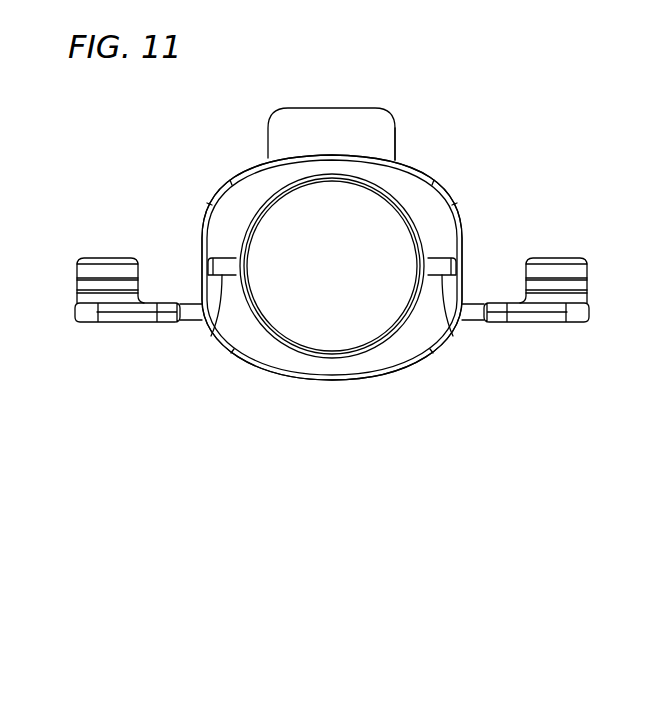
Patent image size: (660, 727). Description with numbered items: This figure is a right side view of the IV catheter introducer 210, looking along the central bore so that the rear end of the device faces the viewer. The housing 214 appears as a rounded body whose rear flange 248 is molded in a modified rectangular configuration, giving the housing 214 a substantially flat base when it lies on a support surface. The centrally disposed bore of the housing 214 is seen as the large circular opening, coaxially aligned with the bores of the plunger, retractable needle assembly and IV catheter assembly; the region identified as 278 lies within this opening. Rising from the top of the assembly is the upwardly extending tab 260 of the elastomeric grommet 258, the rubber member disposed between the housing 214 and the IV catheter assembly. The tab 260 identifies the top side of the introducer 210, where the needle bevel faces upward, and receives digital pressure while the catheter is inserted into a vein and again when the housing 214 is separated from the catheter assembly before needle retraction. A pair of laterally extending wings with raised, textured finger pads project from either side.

The IV catheter introducer 210 is at (219, 119).
The housing 214 is at (417, 380).
The rear flange 248 is at (440, 221).
The elastomeric grommet 258 is at (407, 147).
The upwardly extending tab 260 is at (360, 120).
The opening 278 is at (351, 273).